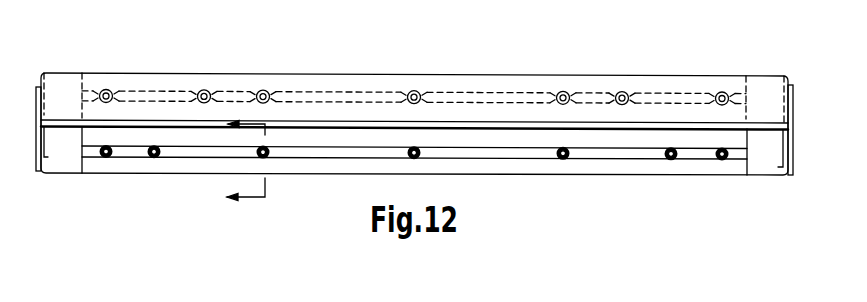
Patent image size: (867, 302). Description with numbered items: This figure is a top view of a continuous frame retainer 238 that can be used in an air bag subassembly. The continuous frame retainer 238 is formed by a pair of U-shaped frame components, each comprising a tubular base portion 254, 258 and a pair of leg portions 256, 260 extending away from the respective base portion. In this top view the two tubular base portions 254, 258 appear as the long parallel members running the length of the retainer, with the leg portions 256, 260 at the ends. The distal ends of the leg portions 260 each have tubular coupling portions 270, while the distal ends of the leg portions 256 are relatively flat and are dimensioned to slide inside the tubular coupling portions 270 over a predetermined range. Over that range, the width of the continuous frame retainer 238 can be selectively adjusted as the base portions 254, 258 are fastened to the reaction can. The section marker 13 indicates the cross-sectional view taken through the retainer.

The continuous frame retainer 238 is at (622, 202).
The tubular base portion 254 is at (475, 75).
The leg portions 256 is at (41, 72).
The tubular base portion 258 is at (520, 174).
The leg portions 260 is at (37, 170).
The tubular coupling portions 270 is at (48, 141).
The section line 13- 13 is at (246, 163).